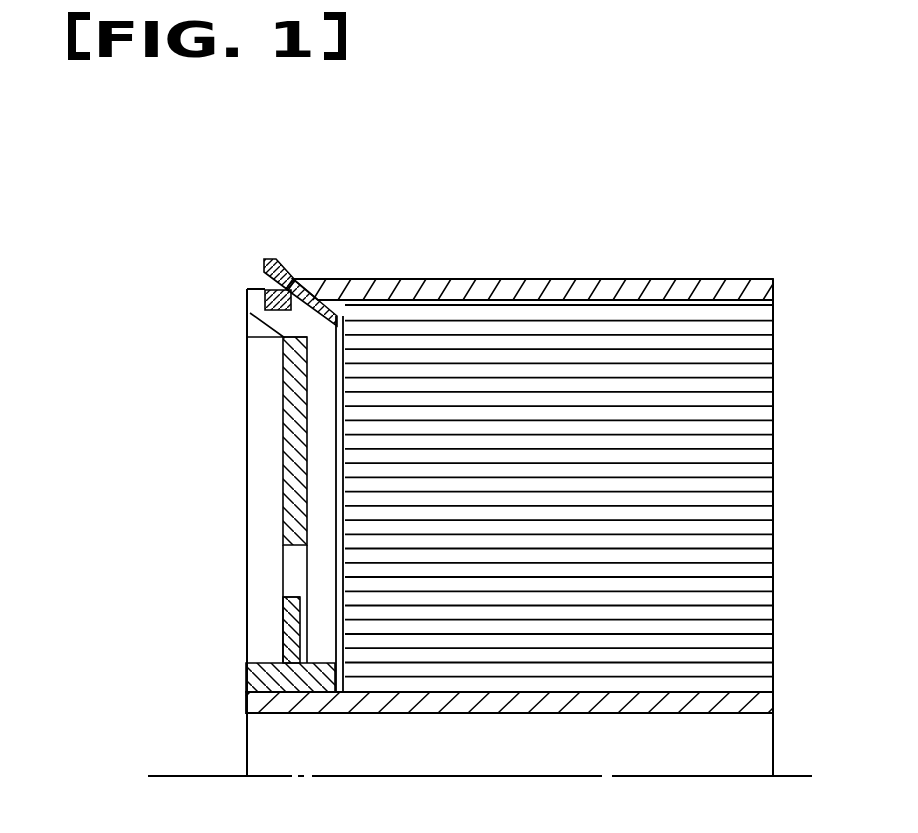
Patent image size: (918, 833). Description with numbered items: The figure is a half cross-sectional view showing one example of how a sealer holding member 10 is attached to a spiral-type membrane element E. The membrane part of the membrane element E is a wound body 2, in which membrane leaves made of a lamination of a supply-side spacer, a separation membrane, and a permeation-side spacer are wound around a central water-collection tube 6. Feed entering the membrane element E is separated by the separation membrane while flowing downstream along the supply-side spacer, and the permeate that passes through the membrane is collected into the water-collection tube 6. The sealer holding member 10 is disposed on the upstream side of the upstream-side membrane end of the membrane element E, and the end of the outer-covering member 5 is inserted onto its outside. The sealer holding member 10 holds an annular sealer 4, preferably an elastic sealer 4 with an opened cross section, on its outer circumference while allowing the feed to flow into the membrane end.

The spiral-type membrane element E is at (476, 256).
The wound body 2 is at (415, 368).
The sealer 4 is at (265, 261).
The outer-covering member 5 is at (682, 280).
The water-collection tube 6 is at (246, 705).
The sealer holding member 10 is at (266, 486).